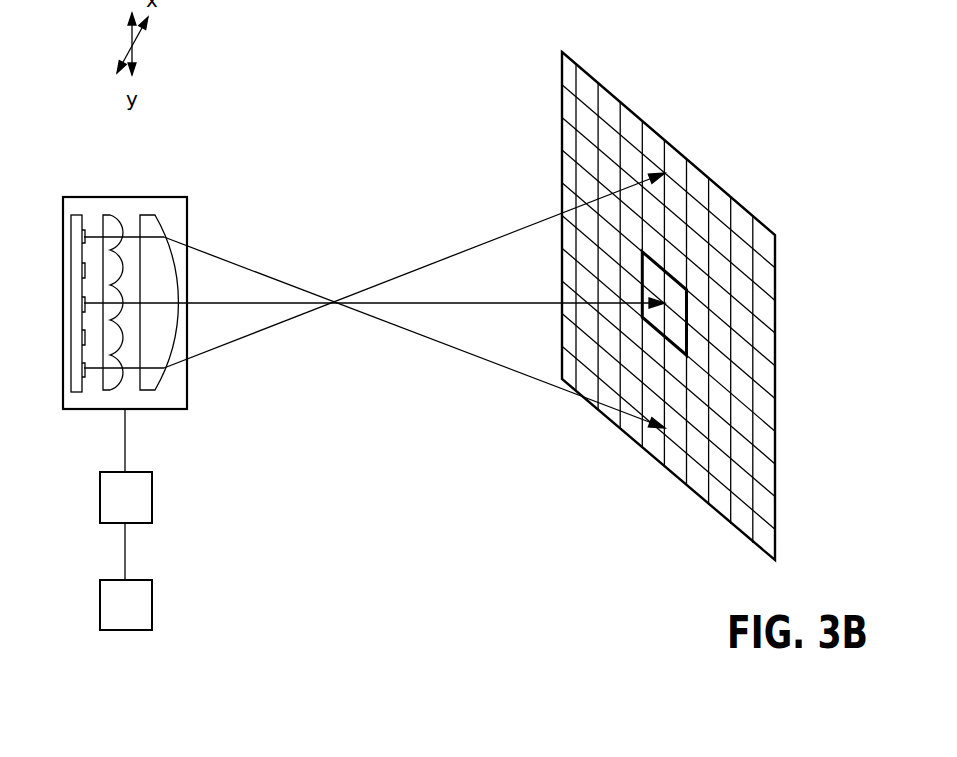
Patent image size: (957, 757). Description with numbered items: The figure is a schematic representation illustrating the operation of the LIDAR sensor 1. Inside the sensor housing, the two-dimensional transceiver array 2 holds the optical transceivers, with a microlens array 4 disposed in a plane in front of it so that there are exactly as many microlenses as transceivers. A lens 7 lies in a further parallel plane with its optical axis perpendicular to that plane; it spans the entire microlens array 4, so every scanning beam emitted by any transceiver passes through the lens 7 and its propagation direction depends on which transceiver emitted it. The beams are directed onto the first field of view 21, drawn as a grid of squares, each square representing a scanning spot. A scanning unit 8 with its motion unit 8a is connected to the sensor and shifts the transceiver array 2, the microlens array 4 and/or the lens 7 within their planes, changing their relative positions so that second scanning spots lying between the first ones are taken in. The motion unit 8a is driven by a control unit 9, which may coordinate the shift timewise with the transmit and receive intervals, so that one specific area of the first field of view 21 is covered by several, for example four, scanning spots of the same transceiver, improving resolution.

The LIDAR sensor 1 is at (173, 207).
The transceiver array 2 is at (75, 217).
The microlens array 4 is at (109, 217).
The lens 7 is at (148, 217).
The scanning unit 8 is at (184, 497).
The motion unit 8a is at (138, 500).
The control unit 9 is at (138, 610).
The first field of view 21 is at (620, 107).